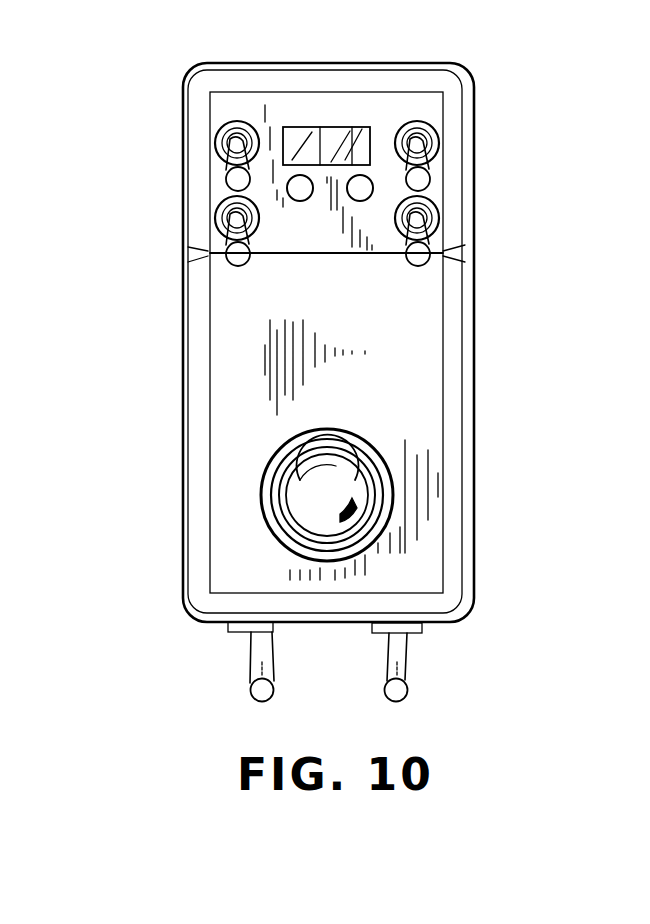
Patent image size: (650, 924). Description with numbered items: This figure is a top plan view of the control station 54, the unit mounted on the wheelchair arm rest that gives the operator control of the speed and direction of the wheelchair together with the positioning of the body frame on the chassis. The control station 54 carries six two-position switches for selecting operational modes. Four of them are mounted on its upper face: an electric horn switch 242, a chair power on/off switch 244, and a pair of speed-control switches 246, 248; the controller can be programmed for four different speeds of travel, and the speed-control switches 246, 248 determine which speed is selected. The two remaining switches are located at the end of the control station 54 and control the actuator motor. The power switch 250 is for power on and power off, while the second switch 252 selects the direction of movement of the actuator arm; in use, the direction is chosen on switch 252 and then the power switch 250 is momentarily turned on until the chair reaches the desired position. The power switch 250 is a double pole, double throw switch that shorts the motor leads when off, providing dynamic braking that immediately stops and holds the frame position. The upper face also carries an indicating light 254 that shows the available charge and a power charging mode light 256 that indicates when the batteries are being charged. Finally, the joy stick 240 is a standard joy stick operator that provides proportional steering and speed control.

The control station 54 is at (127, 505).
The joy stick 240 is at (328, 470).
The electric horn switch 242 is at (230, 183).
The chair power on/off switch 244 is at (424, 182).
The speed-control switch 246 is at (230, 263).
The speed-control switch 248 is at (428, 263).
The actuator power on/off switch 250 is at (249, 684).
The actuator direction switch 252 is at (408, 685).
The indicating light 254 is at (338, 140).
The power charging mode light 256 is at (297, 201).